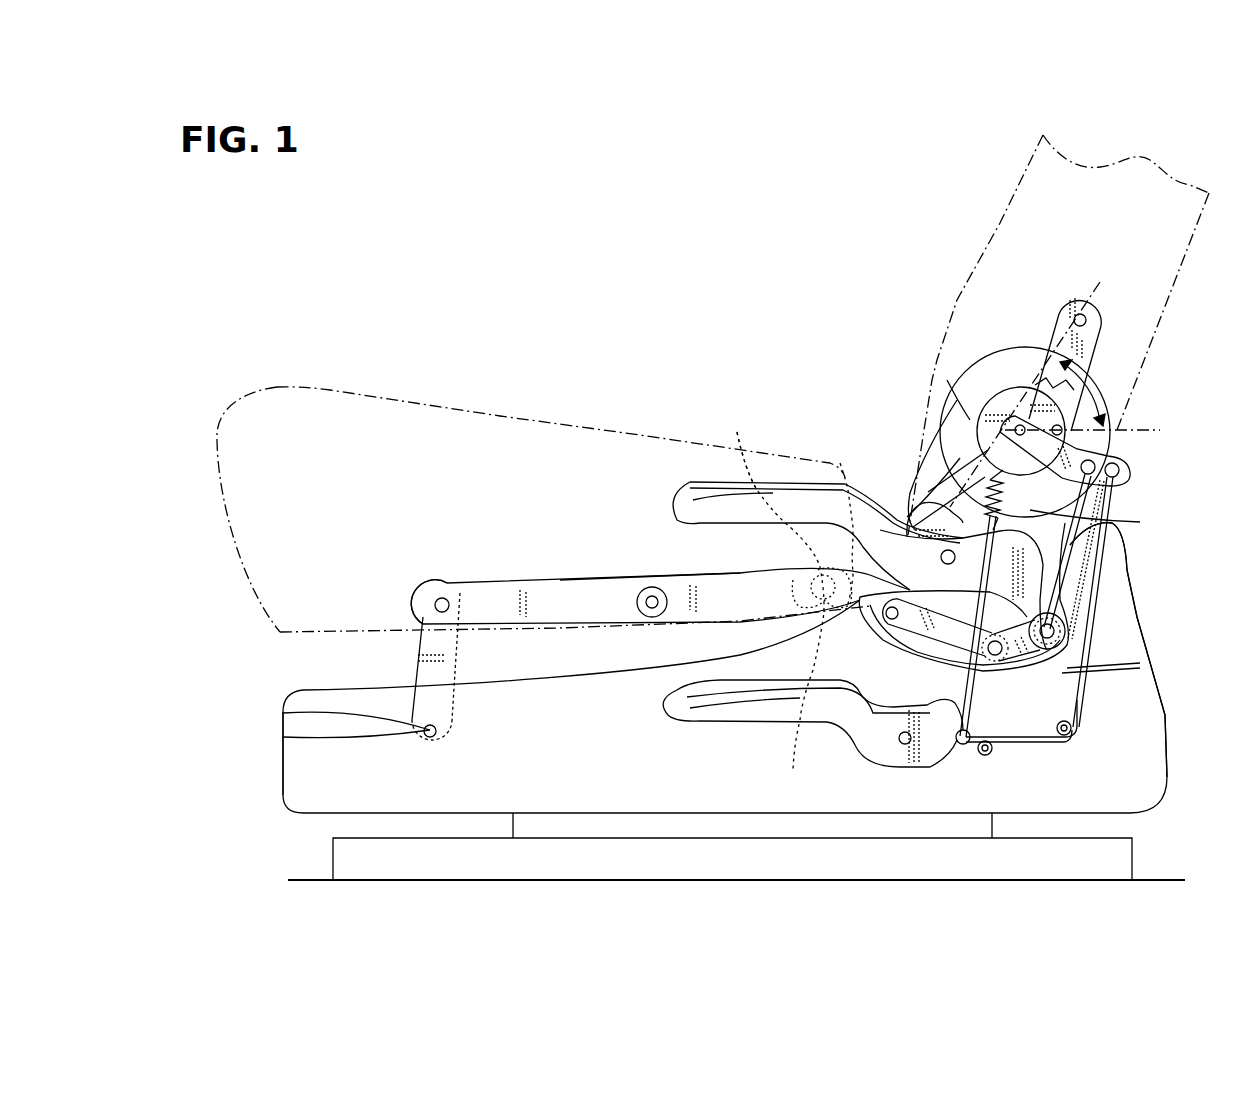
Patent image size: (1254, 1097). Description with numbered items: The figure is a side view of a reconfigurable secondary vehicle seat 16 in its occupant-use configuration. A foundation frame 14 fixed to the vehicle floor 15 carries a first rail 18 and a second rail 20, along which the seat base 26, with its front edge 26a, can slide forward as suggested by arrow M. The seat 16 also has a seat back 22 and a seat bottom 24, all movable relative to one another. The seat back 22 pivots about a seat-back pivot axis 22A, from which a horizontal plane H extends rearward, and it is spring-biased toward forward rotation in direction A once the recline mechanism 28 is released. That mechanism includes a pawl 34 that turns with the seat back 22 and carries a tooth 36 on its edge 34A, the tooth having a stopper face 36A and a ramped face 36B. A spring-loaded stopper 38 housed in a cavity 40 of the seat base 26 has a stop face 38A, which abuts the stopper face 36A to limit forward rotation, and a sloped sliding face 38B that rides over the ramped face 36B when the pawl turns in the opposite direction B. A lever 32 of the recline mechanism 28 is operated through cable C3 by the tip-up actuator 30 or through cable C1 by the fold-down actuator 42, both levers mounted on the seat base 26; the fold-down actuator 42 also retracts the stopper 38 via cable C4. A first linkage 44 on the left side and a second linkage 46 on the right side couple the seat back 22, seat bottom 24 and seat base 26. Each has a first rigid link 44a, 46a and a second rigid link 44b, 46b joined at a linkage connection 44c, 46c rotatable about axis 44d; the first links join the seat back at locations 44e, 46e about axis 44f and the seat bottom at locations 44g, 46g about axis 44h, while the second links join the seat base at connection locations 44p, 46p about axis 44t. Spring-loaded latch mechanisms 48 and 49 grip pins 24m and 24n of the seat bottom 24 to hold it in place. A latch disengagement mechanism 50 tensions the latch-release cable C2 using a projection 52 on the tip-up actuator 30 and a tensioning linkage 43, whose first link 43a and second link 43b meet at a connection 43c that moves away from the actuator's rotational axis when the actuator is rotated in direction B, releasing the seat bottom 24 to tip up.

The foundation frame 14 is at (1110, 858).
The floor 15 is at (312, 878).
The vehicle seat 16 is at (674, 263).
The first rail 18 is at (846, 825).
The second rail 20 is at (985, 825).
The seat back 22 is at (1152, 160).
The seat-back pivot axis 22A is at (983, 393).
The seat bottom 24 is at (277, 387).
The pin 24m is at (795, 612).
The pin 24n is at (767, 792).
The seat base 26 is at (683, 668).
The front edge 26a is at (283, 765).
The seat back recline mechanism 28 is at (987, 400).
The tip-up actuator 30 is at (800, 497).
The lever 32 is at (1108, 457).
The pawl 34 is at (987, 347).
The edge 34A is at (1003, 403).
The tooth 36 is at (973, 437).
The stopper face 36A is at (884, 563).
The ramped face 36B is at (963, 448).
The stopper 38 is at (1003, 497).
The stop face 38A is at (940, 585).
The sliding face 38B is at (1110, 445).
The cavity 40 is at (1085, 547).
The fold-down actuator 42 is at (762, 710).
The tensioning linkage 43 is at (1031, 658).
The first link 43a is at (940, 633).
The second link 43b is at (1017, 645).
The connection 43c is at (997, 657).
The first linkage 44 is at (542, 625).
The second linkage 46 is at (542, 625).
The first rigid link 44a is at (645, 547).
The first rigid link 46a is at (588, 600).
The second rigid link 44b is at (375, 666).
The second rigid link 46b is at (425, 657).
The linkage connection 44c is at (376, 593).
The linkage connection 46c is at (428, 596).
The axis 44d is at (442, 604).
The location 44e is at (1070, 321).
The location 46e is at (1070, 300).
The axis 44f is at (1093, 317).
The location 44g is at (666, 642).
The location 46g is at (636, 604).
The axis 44h is at (650, 618).
The connection location 44p is at (302, 709).
The connection location 46p is at (283, 713).
The axis 44t is at (283, 737).
The latch mechanism 48 is at (735, 445).
The latch mechanism 49 is at (710, 421).
The latch disengagement mechanism 50 is at (1008, 680).
The projection 52 is at (1070, 647).
The cable C1 is at (1085, 708).
The latch-release cable C2 is at (1080, 600).
The cable C3 is at (1140, 522).
The cable C4 is at (930, 760).
The direction A is at (558, 188).
The direction B is at (581, 225).
The arrow M is at (397, 240).
The direction N is at (305, 264).
The horizontal plane H is at (1157, 430).